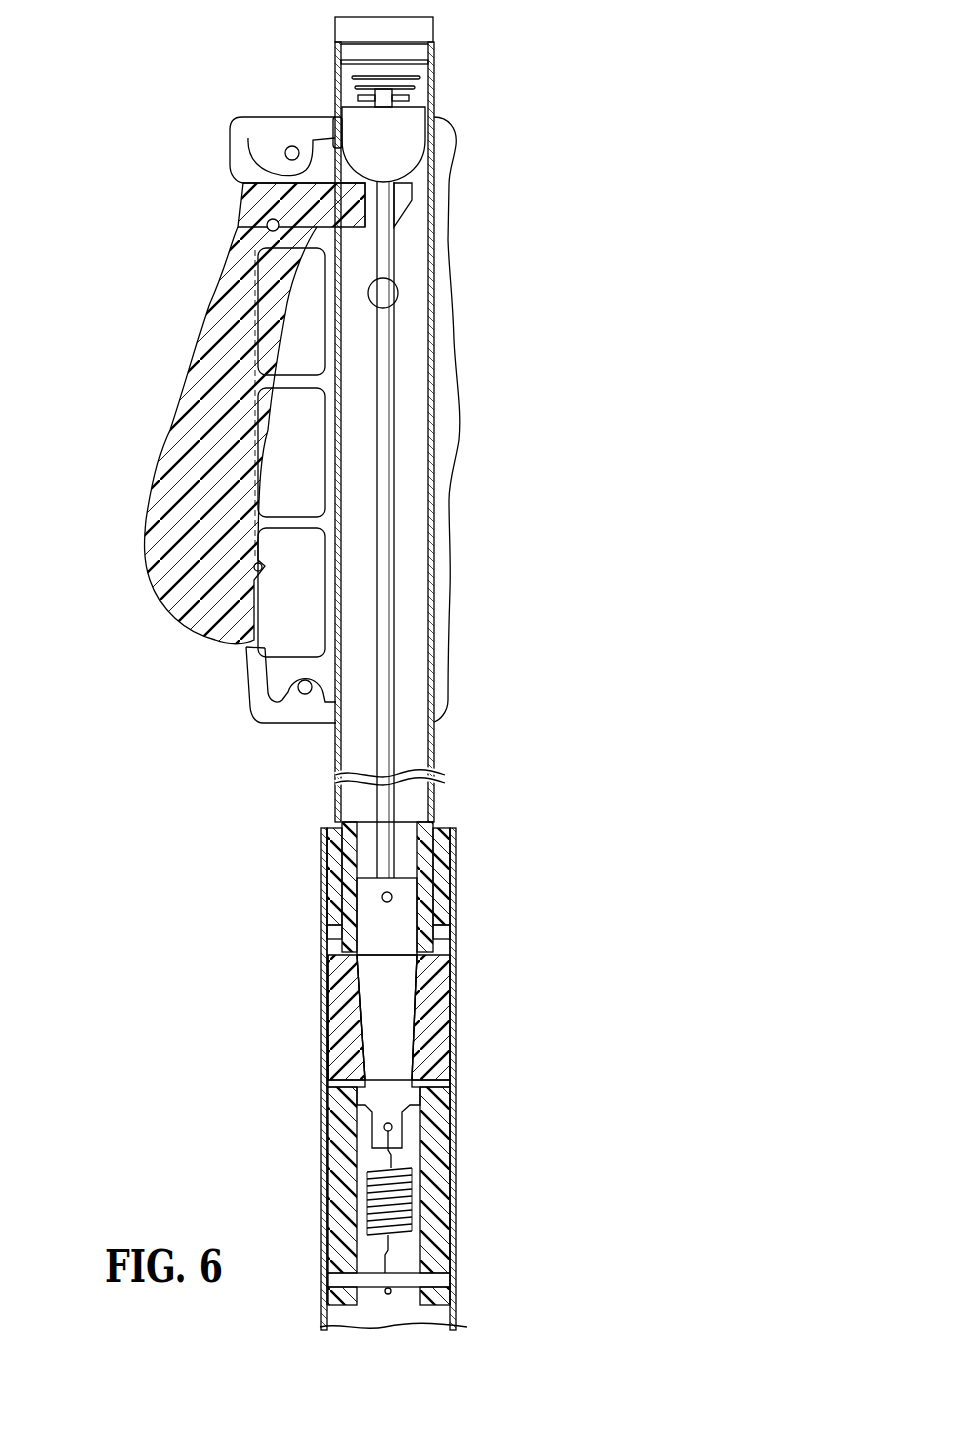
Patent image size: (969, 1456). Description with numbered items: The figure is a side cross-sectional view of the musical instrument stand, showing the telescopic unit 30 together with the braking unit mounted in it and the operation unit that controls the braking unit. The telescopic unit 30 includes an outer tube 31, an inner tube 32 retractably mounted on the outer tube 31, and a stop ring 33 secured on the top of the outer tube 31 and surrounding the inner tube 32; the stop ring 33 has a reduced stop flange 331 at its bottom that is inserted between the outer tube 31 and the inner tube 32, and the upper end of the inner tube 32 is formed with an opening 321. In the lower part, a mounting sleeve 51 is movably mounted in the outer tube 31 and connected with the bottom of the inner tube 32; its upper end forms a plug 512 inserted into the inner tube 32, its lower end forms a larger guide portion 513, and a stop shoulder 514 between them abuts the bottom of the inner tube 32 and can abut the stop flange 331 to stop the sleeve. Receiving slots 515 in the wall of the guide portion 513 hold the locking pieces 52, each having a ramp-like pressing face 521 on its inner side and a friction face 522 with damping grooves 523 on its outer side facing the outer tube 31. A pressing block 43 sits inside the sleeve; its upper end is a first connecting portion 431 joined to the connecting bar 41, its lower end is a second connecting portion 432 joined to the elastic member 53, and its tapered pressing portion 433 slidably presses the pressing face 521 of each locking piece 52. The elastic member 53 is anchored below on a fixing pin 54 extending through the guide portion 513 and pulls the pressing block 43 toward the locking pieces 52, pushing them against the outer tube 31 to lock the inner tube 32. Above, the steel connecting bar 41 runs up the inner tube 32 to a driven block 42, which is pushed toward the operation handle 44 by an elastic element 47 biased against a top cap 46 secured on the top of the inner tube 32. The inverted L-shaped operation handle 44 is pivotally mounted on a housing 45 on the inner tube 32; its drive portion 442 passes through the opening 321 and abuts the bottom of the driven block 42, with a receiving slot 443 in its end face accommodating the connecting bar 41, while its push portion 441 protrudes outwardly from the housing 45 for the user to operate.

The telescopic unit 30 is at (442, 668).
The outer tube 31 is at (453, 1125).
The inner tube 32 is at (435, 420).
The stop ring 33 is at (445, 832).
The stop flange 331 is at (433, 933).
The opening 321 is at (338, 165).
The connecting bar 41 is at (385, 363).
The driven block 42 is at (403, 135).
The pressing block 43 is at (402, 1028).
The first connecting portion 431 is at (372, 938).
The second connecting portion 432 is at (377, 1128).
The pressing portion 433 is at (372, 1027).
The operation handle 44 is at (213, 411).
The push portion 441 is at (175, 443).
The drive portion 442 is at (293, 192).
The receiving slot 443 is at (405, 195).
The housing 45 is at (235, 145).
The top cap 46 is at (430, 33).
The elastic element 47 is at (413, 88).
The mounting sleeve 51 is at (425, 900).
The plug 512 is at (423, 862).
The guide portion 513 is at (447, 1165).
The stop shoulder 514 is at (335, 915).
The receiving slots 515 is at (338, 1070).
The locking pieces 52 is at (330, 967).
The pressing face 521 is at (397, 987).
The friction face 522 is at (327, 993).
The damping grooves 523 is at (328, 1060).
The elastic member 53 is at (413, 1198).
The fixing pin 54 is at (403, 1277).